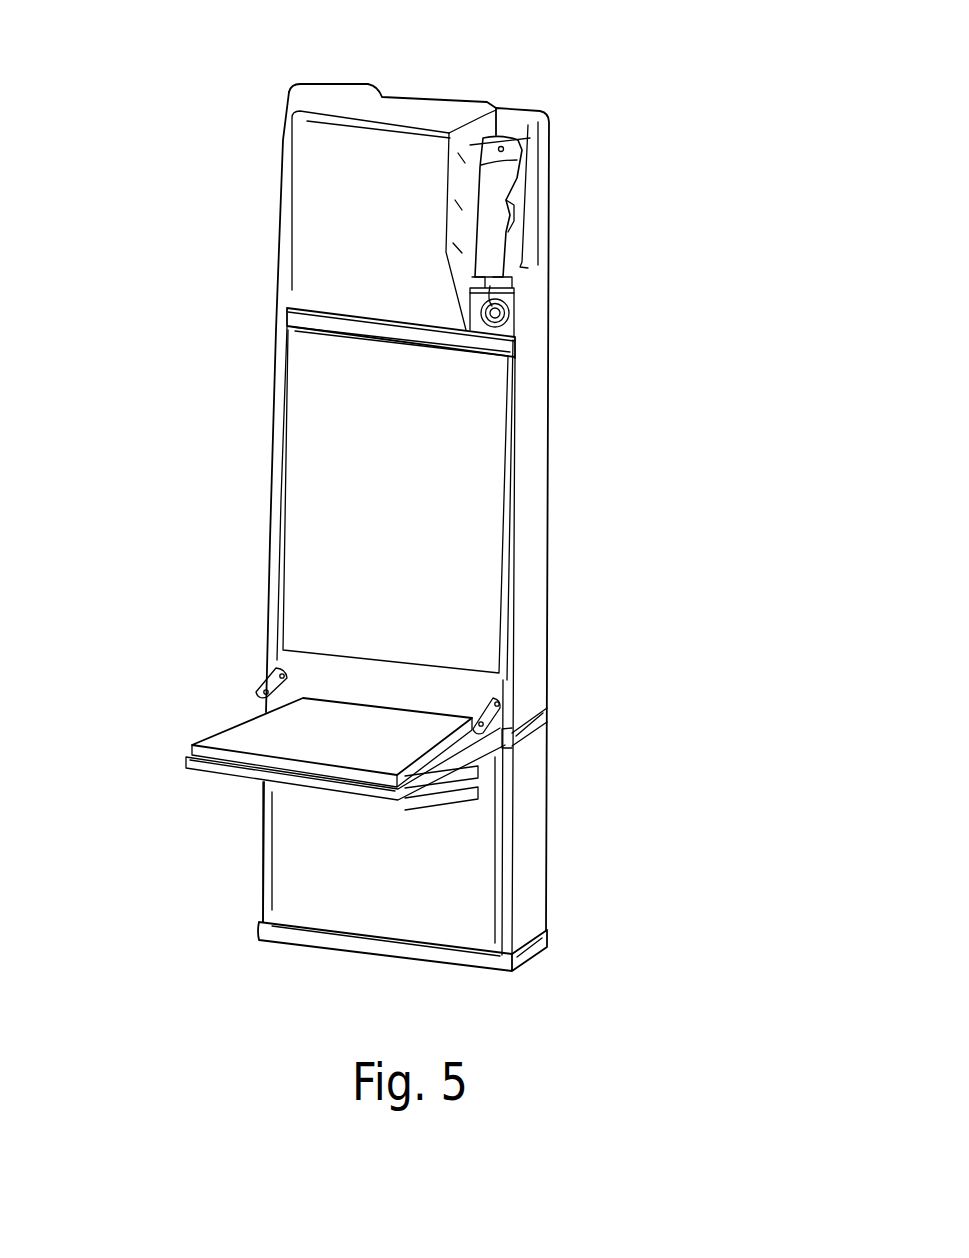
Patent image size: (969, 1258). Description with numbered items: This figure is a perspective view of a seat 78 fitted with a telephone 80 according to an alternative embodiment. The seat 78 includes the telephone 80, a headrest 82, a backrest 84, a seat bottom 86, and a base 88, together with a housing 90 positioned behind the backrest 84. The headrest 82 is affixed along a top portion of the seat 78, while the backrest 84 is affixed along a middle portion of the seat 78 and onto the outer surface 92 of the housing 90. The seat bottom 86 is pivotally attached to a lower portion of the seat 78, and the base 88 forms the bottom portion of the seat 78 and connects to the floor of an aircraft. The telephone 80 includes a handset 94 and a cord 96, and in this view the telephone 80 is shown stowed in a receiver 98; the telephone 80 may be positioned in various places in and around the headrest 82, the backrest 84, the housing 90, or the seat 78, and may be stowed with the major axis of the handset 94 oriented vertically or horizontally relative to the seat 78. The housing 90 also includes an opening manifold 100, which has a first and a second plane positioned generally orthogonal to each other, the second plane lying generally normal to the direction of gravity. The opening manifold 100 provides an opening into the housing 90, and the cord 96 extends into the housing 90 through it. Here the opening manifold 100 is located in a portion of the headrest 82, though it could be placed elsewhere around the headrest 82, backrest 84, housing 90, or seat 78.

The seat 78 is at (152, 515).
The telephone 80 is at (505, 228).
The headrest 82 is at (337, 207).
The backrest 84 is at (333, 422).
The seat bottom 86 is at (214, 729).
The base 88 is at (591, 870).
The housing 90 is at (540, 512).
The outer surface 92 is at (531, 440).
The handset 94 is at (510, 183).
The cord 96 is at (501, 300).
The receiver 98 is at (502, 137).
The opening manifold 100 is at (516, 322).